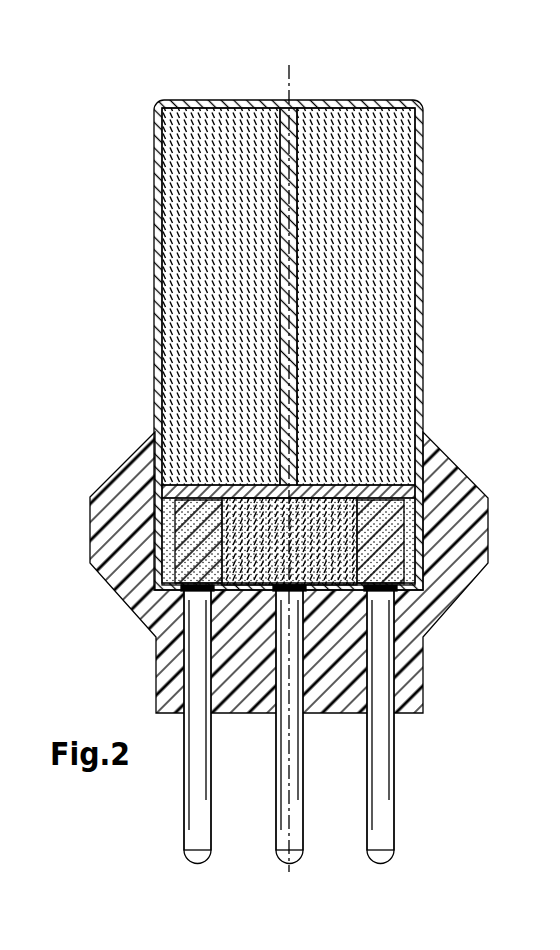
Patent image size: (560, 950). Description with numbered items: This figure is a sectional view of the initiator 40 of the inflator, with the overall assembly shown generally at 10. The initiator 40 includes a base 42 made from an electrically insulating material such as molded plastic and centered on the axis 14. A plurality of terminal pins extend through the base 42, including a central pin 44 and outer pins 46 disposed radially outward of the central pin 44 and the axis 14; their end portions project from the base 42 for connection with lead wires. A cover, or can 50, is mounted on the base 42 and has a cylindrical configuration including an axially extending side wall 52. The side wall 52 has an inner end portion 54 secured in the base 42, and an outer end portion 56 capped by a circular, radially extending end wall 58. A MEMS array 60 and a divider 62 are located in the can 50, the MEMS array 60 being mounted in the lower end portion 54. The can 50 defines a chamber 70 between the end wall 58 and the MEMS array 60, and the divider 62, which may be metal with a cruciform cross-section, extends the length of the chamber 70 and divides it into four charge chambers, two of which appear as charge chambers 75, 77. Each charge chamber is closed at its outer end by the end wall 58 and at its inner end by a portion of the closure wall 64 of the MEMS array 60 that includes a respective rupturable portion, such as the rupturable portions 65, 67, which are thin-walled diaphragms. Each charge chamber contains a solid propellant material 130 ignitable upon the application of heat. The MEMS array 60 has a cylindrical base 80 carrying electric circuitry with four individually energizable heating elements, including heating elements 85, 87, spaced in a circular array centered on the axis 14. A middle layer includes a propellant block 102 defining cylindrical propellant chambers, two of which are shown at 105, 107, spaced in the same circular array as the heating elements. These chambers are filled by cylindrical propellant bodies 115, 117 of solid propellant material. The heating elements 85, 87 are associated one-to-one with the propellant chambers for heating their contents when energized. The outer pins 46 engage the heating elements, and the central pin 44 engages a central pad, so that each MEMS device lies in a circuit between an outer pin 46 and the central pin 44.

The sensor assembly 10 is at (136, 824).
The axis 14 is at (292, 75).
The initiator 40 is at (118, 782).
The base 42 is at (424, 706).
The central pin 44 is at (304, 805).
The outer pins 46 is at (184, 800).
The can 50 is at (147, 303).
The side wall 52 is at (155, 250).
The inner end portion 54 is at (158, 468).
The outer end portion 56 is at (158, 163).
The end wall 58 is at (272, 103).
The MEMS array 60 is at (314, 466).
The divider 62 is at (293, 283).
The closure wall 64 is at (212, 480).
The rupturable portion 65 is at (194, 482).
The rupturable portion 67 is at (336, 497).
The chamber 70 is at (195, 205).
The charge chamber 75 is at (187, 341).
The charge chamber 77 is at (365, 192).
The base 80 is at (165, 650).
The electric heating element 85 is at (162, 613).
The electric heating element 87 is at (428, 568).
The propellant block 102 is at (305, 520).
The propellant chamber 105 is at (172, 520).
The propellant chamber 107 is at (420, 527).
The propellant body 115 is at (172, 590).
The propellant body 117 is at (440, 505).
The solid propellant material 130 is at (395, 135).